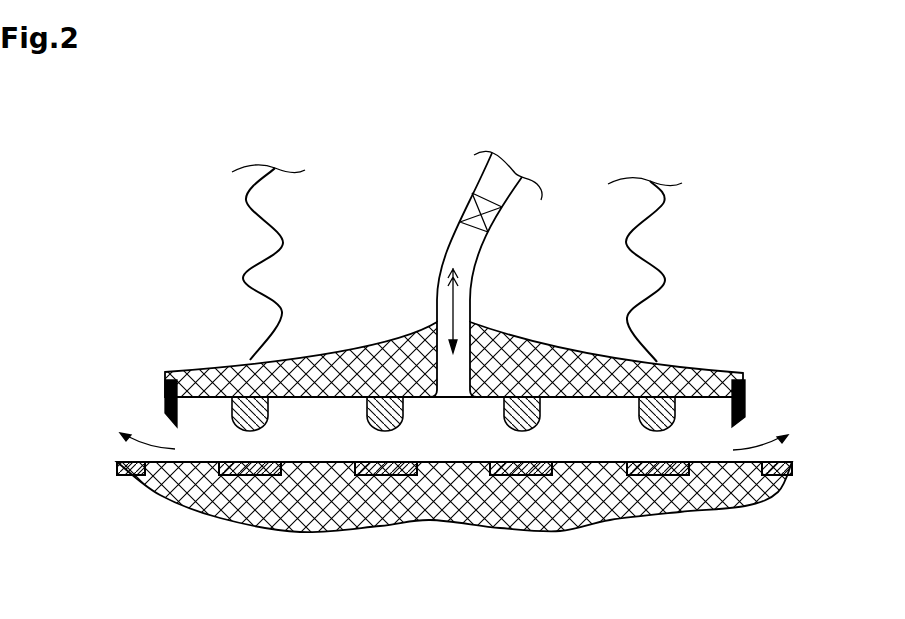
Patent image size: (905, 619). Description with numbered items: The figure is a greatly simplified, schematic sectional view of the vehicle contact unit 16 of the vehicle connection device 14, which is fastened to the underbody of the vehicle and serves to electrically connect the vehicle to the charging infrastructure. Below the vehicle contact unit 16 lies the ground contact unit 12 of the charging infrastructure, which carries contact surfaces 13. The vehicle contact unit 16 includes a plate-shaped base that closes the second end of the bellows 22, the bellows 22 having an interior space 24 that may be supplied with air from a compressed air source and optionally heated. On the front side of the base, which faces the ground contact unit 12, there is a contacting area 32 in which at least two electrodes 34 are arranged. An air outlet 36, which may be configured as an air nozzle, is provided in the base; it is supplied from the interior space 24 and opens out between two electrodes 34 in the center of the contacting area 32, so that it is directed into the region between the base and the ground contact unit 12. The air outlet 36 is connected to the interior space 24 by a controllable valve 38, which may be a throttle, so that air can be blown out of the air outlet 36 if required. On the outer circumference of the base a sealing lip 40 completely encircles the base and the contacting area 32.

The ground contact unit 12 is at (187, 508).
The contact surfaces 13 is at (262, 476).
The vehicle connection device 14 is at (165, 402).
The vehicle contact unit 16 is at (212, 260).
The bellows 22 is at (662, 267).
The interior space 24 is at (359, 265).
The contacting area 32 is at (574, 432).
The electrodes 34 is at (380, 430).
The air outlet 36 is at (457, 378).
The controllable valve 38 is at (470, 202).
The sealing lip 40 is at (748, 380).